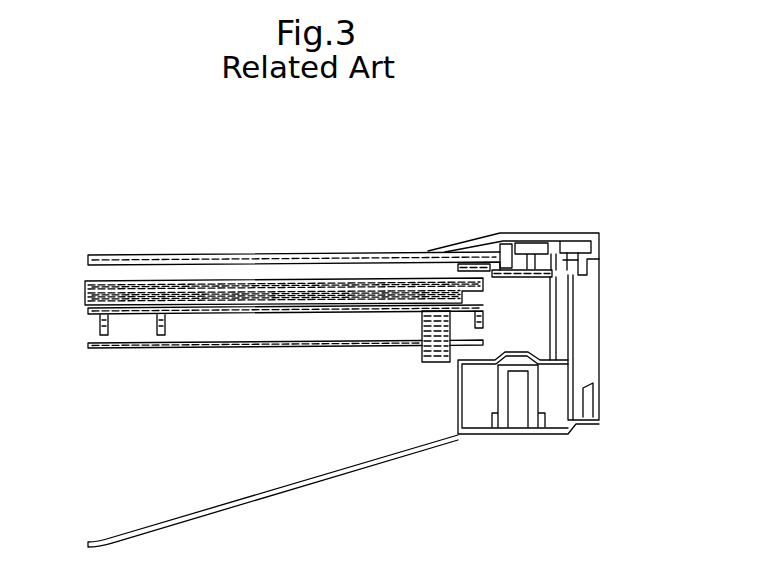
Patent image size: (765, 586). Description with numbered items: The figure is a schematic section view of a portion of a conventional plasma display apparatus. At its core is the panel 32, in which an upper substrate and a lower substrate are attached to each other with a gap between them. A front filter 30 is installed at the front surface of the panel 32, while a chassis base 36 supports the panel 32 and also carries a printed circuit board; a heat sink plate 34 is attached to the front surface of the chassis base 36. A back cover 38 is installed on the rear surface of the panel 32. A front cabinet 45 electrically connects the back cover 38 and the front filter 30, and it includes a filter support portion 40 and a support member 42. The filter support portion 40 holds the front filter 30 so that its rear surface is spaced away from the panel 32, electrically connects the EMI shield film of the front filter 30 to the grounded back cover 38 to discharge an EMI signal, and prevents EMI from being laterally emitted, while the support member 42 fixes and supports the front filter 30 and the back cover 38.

The front filter 30 is at (115, 262).
The panel 32 is at (87, 283).
The heat sink plate 34 is at (100, 328).
The chassis base 36 is at (143, 348).
The back cover 38 is at (299, 477).
The filter support portion 40 is at (552, 318).
The support member 42 is at (545, 237).
The front cabinet 45 is at (612, 263).